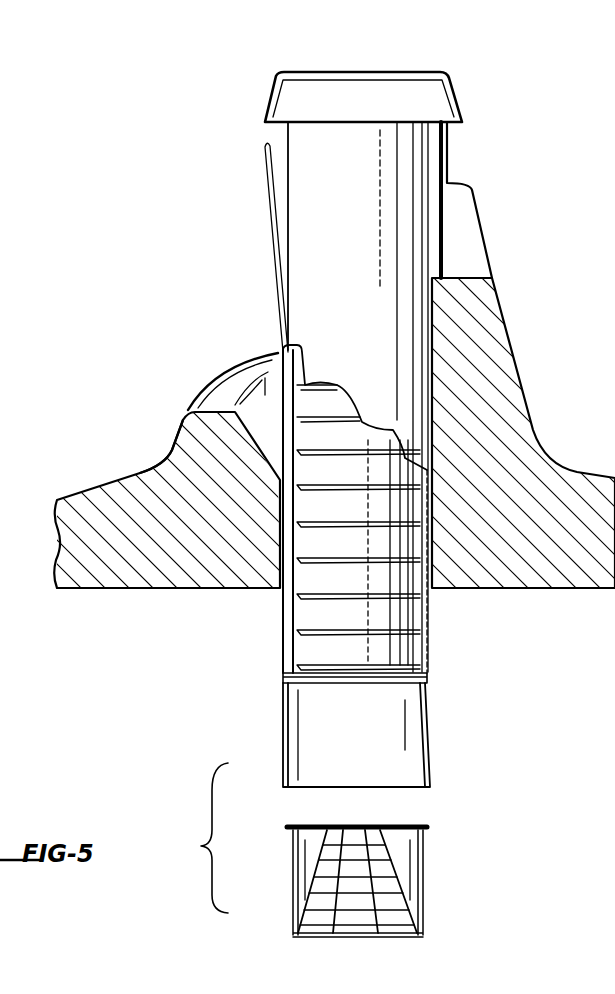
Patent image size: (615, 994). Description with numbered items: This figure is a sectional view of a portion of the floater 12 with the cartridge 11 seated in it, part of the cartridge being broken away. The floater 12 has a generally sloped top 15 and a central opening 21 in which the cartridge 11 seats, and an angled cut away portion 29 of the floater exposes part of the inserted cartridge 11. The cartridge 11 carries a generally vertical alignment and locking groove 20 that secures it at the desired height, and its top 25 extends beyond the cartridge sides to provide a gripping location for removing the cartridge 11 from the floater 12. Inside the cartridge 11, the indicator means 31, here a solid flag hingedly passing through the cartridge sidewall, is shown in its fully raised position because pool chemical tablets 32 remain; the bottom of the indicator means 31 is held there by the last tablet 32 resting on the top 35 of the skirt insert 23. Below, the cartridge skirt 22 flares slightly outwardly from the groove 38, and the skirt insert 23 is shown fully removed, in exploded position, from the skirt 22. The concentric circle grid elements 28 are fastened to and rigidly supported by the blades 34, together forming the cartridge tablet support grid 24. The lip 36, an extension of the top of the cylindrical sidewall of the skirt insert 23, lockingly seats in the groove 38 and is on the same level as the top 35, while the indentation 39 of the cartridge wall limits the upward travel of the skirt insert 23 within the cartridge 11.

The cartridge 11 is at (364, 397).
The floater 12 is at (57, 505).
The sloped top 15 is at (172, 455).
The alignment and locking groove 20 is at (445, 158).
The central opening 21 is at (268, 368).
The skirt 22 is at (428, 737).
The skirt insert 23 is at (427, 853).
The cartridge tablet support grid 24 is at (403, 938).
The top 25 is at (460, 118).
The concentric circle grid elements 28 is at (317, 927).
The angled cut away portion 29 is at (217, 390).
The indicator means 31 is at (264, 162).
The pool chemical tablets 32 is at (400, 640).
The blades 34 is at (380, 897).
The top 35 is at (370, 827).
The lip 36 is at (290, 825).
The groove 38 is at (283, 682).
The indentation 39 is at (427, 678).